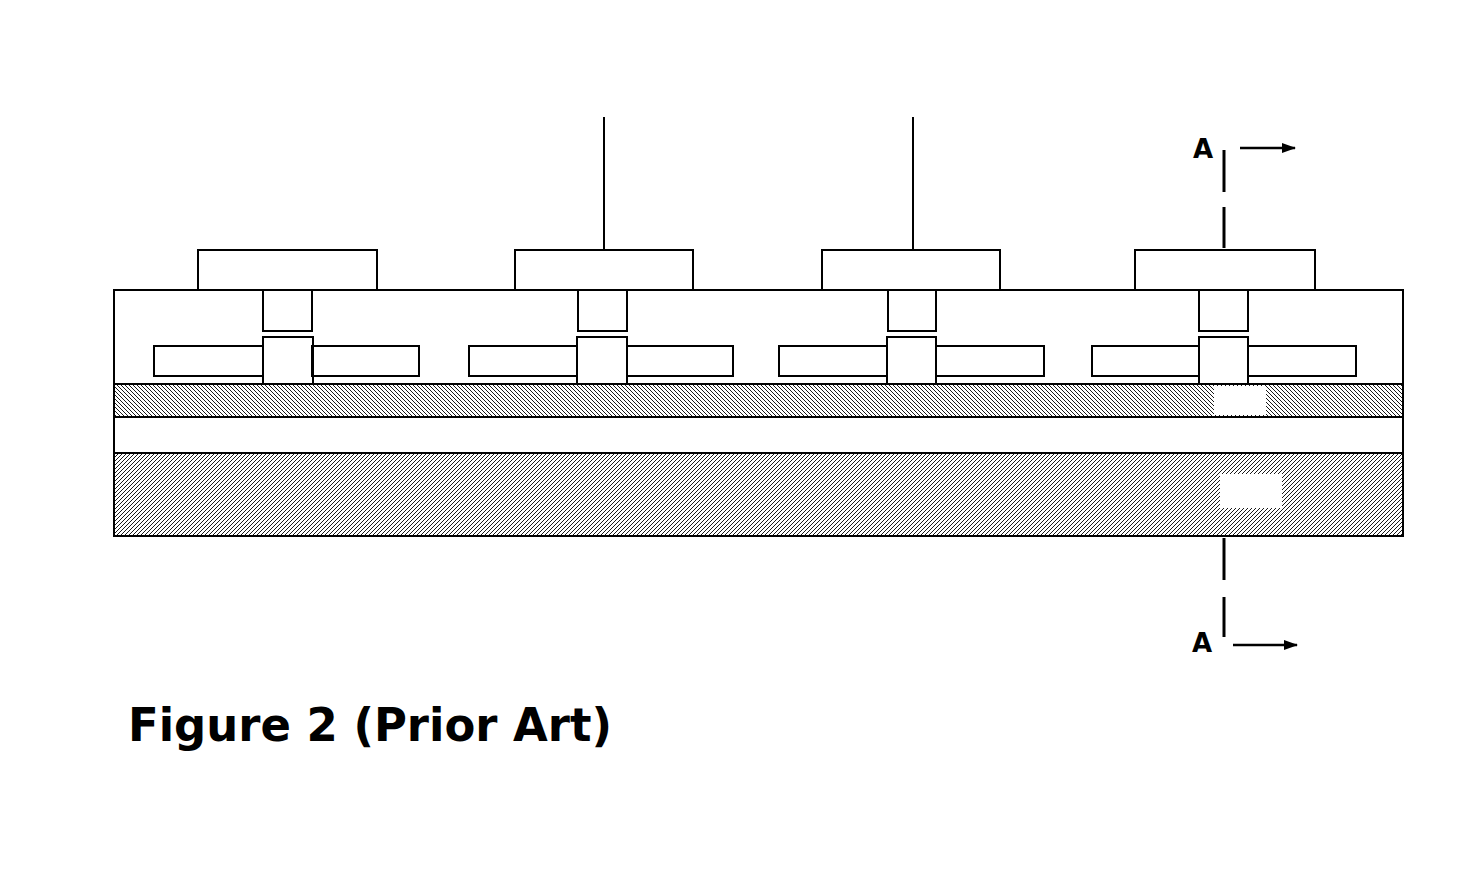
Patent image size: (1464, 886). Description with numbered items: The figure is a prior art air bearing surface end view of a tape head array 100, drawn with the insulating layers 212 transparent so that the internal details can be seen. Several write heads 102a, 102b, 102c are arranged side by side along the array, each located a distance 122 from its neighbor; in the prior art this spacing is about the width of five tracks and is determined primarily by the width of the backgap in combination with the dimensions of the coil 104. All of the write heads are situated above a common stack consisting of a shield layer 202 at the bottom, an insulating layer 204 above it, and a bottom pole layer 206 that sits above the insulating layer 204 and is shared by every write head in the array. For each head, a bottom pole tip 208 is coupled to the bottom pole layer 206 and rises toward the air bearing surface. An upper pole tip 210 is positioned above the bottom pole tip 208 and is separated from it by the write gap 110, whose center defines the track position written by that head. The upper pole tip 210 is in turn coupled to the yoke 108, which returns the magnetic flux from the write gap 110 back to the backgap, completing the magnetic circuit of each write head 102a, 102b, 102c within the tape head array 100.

The tape head array 100 is at (1337, 242).
The write head 102a is at (307, 351).
The write head 102b is at (690, 323).
The write head 102c is at (1013, 313).
The coil 104 is at (209, 362).
The yoke 108 is at (230, 262).
The write gap 110 is at (288, 337).
The distance 122 is at (912, 144).
The shield layer 202 is at (1280, 505).
The insulating layer 204 is at (1156, 448).
The bottom pole layer 206 is at (1264, 412).
The bottom pole tip 208 is at (287, 359).
The upper pole tip 210 is at (288, 312).
The insulating layers 212 is at (790, 333).